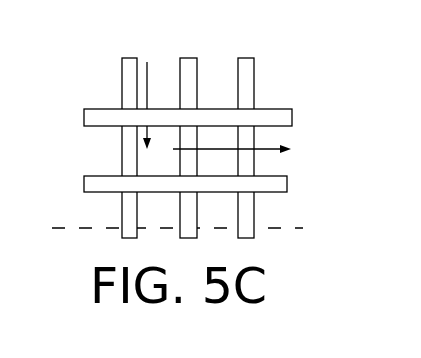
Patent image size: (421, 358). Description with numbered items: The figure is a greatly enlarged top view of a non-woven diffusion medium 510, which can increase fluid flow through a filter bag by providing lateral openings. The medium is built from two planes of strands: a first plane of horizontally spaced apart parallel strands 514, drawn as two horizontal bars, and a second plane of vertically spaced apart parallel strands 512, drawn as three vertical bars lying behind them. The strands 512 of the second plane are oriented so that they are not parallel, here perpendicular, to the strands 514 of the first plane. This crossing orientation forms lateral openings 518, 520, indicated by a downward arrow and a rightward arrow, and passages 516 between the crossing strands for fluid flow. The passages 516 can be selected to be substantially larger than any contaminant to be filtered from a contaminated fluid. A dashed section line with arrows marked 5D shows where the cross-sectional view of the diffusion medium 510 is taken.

The non-woven diffusion medium 510 is at (225, 126).
The vertically spaced apart parallel strands 512 is at (243, 56).
The horizontally spaced apart parallel strands 514 is at (176, 133).
The passages 516 is at (168, 133).
The lateral opening 518 is at (152, 141).
The lateral opening 520 is at (284, 149).
The section line 5D is at (47, 218).